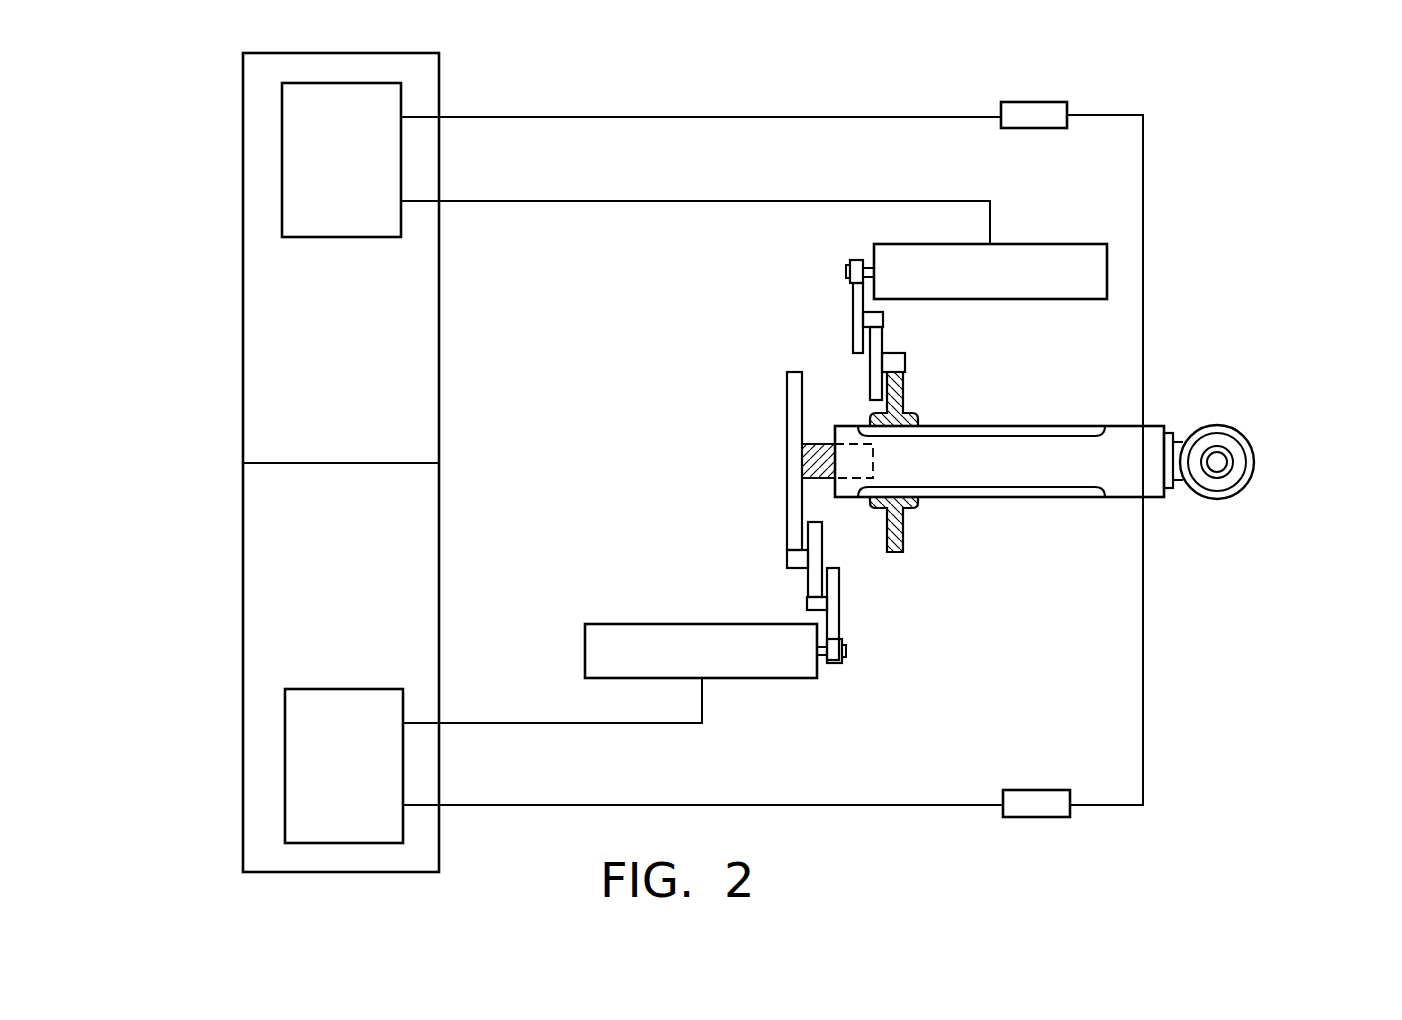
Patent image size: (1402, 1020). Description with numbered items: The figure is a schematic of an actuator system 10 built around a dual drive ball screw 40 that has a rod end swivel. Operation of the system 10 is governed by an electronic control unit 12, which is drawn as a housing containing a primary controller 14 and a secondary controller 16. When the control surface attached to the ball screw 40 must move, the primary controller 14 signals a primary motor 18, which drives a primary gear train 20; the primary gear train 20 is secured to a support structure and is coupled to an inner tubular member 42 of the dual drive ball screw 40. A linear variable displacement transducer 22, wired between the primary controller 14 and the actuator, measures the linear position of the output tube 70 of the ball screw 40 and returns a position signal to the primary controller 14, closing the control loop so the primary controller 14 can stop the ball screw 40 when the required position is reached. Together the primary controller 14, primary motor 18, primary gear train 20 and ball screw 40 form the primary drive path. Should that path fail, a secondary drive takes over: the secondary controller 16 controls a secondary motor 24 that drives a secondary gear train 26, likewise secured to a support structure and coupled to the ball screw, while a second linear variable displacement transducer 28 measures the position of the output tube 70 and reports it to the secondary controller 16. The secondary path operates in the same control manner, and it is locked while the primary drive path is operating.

The actuator system 10 is at (1232, 272).
The electronic control unit 12 is at (243, 432).
The primary controller 14 is at (344, 766).
The secondary controller 16 is at (341, 160).
The primary motor 18 is at (639, 624).
The primary gear train 20 is at (841, 602).
The linear variable displacement transducer 22 is at (1048, 810).
The secondary motor 24 is at (1030, 252).
The secondary gear train 26 is at (852, 316).
The linear variable displacement transducer 28 is at (1050, 108).
The dual drive ball screw 40 is at (1040, 470).
The inner tubular member 42 is at (845, 430).
The output tube 70 is at (1157, 497).